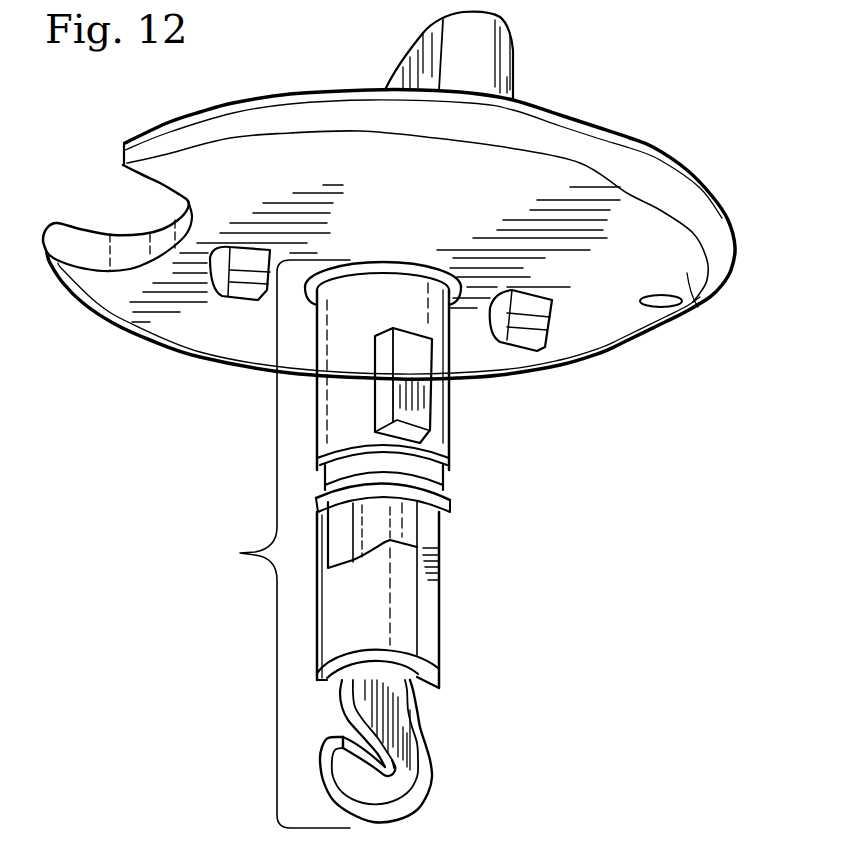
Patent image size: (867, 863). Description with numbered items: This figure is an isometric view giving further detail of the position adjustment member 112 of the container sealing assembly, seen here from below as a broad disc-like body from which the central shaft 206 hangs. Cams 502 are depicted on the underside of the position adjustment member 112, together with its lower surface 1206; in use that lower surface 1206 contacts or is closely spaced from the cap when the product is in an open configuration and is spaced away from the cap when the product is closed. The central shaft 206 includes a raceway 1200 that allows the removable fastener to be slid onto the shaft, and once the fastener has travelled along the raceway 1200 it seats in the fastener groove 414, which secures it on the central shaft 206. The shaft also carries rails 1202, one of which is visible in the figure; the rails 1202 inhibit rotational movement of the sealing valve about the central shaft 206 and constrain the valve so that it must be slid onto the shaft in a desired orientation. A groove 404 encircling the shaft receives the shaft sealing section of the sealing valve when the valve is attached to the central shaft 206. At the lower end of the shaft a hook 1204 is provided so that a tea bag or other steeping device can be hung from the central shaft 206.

The position adjustment member 112 is at (734, 165).
The lower surface 1206 is at (694, 298).
The cams 502 is at (239, 293).
The raceway 1200 is at (431, 617).
The rails 1202 is at (412, 418).
The groove 404 is at (410, 475).
The fastener groove 414 is at (390, 532).
The hook 1204 is at (410, 760).
The central shaft 206 is at (271, 544).